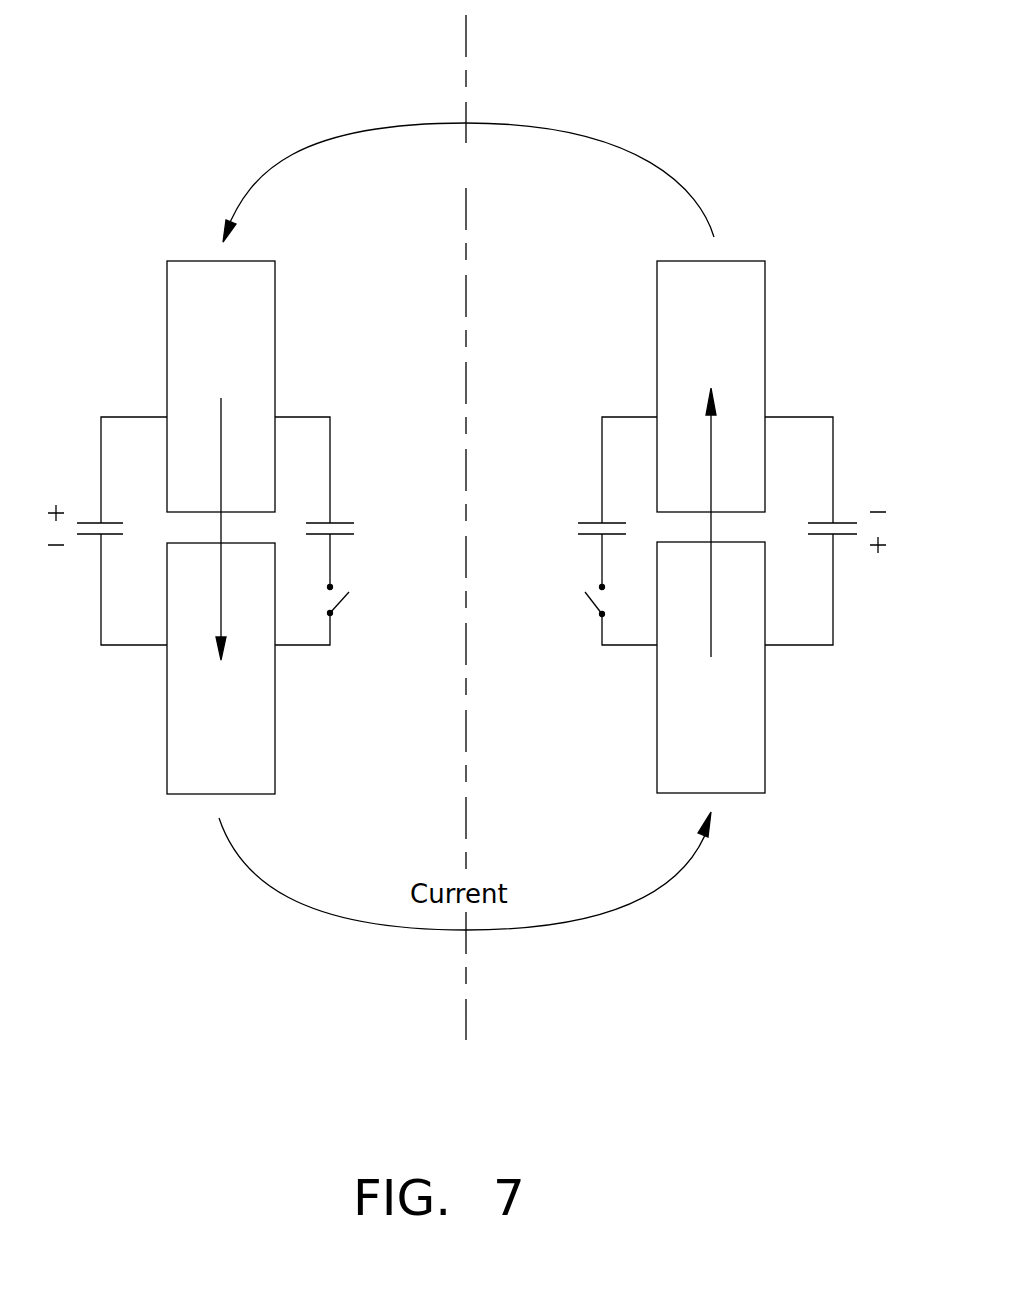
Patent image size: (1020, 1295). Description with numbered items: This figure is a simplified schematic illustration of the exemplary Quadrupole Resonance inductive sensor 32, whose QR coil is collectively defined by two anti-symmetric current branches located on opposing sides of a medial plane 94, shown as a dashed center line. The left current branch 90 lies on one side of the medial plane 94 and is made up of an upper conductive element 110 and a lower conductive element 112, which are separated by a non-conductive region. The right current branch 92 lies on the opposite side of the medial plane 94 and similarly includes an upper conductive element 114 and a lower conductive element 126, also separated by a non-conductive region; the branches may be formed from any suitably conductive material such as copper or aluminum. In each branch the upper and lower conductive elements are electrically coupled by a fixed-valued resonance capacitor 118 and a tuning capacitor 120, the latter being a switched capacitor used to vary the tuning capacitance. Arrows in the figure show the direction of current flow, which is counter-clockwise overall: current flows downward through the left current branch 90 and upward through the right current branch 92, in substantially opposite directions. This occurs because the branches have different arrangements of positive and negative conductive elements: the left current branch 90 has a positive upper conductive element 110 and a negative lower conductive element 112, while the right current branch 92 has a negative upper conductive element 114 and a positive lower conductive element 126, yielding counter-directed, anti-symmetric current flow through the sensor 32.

The inductive sensor 32 is at (776, 216).
The left current branch 90 is at (472, 576).
The right current branch 92 is at (735, 574).
The medial plane 94 is at (466, 80).
The upper conductive element 110 is at (247, 345).
The lower conductive element 112 is at (247, 751).
The upper conductive element 114 is at (737, 345).
The fourth electrode 126 is at (737, 751).
The fixed-valued resonance capacitor 118 is at (153, 488).
The tuning capacitor 120 is at (398, 488).